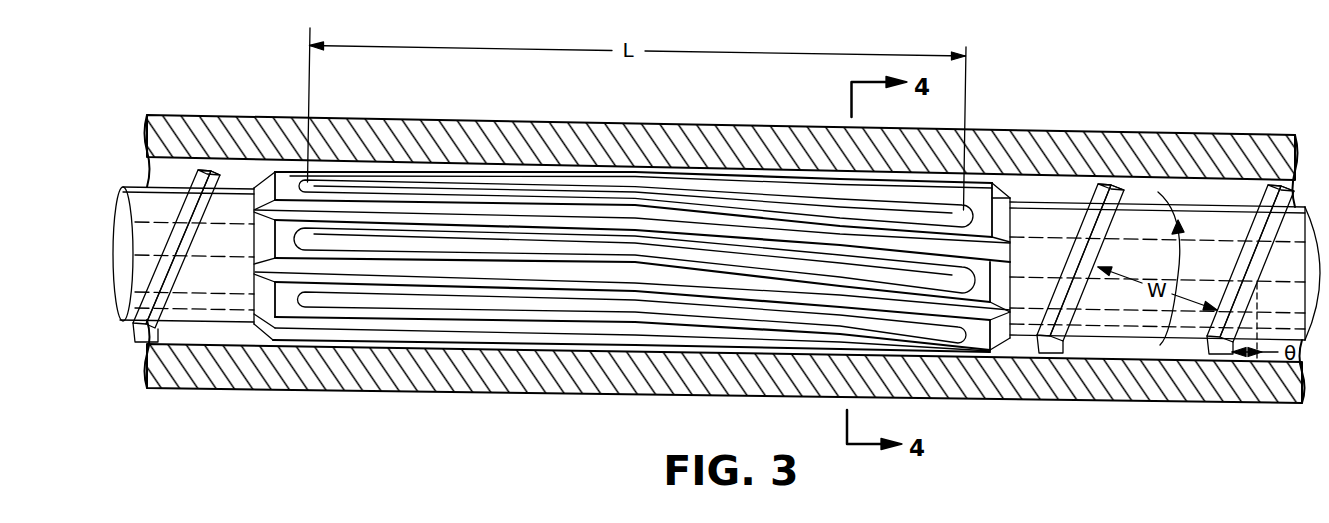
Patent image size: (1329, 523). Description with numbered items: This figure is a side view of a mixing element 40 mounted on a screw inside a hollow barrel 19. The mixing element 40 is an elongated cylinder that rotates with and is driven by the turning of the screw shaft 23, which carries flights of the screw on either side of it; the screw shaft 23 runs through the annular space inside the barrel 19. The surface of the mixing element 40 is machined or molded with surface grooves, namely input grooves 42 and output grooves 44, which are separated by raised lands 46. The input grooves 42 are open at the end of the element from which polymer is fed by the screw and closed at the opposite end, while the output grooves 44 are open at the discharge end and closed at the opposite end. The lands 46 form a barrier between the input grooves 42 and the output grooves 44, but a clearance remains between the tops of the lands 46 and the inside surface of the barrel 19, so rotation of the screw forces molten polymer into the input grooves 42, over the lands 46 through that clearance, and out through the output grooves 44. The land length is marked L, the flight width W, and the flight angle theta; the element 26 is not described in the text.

The hollow barrel 19 is at (1067, 128).
The screw shaft 23 is at (1197, 202).
The keys 26 is at (1062, 356).
The mixing element 40 is at (1003, 190).
The input grooves 42 is at (732, 250).
The output grooves 44 is at (616, 217).
The lands 46 is at (430, 224).